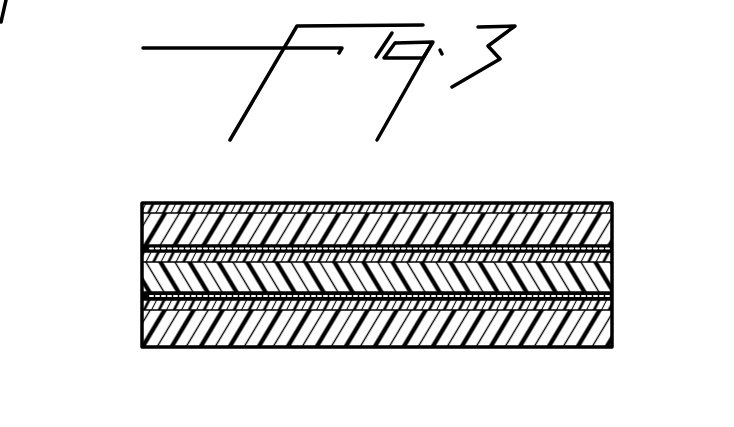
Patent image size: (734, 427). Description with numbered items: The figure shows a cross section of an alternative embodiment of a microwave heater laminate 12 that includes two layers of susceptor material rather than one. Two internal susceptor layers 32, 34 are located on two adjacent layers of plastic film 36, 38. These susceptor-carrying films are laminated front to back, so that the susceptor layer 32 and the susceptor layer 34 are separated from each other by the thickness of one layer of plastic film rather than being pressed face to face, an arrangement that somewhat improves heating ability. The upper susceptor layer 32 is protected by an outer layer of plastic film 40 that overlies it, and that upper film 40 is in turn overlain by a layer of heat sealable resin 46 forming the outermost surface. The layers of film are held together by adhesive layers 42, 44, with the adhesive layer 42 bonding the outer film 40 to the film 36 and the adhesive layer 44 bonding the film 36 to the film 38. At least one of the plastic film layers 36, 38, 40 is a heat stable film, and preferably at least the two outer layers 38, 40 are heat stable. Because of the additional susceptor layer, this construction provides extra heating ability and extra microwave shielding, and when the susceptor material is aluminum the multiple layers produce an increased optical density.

The laminated panel 12 is at (0, 140).
The layer of heat sealable resin 46 is at (508, 204).
The outer layer of plastic film 40 is at (612, 233).
The adhesive layer 42 is at (142, 248).
The internal susceptor layer 32 is at (142, 256).
The layer of plastic film 36 is at (612, 282).
The adhesive layer 44 is at (142, 296).
The internal susceptor layer 34 is at (142, 303).
The layer of plastic film 38 is at (600, 327).